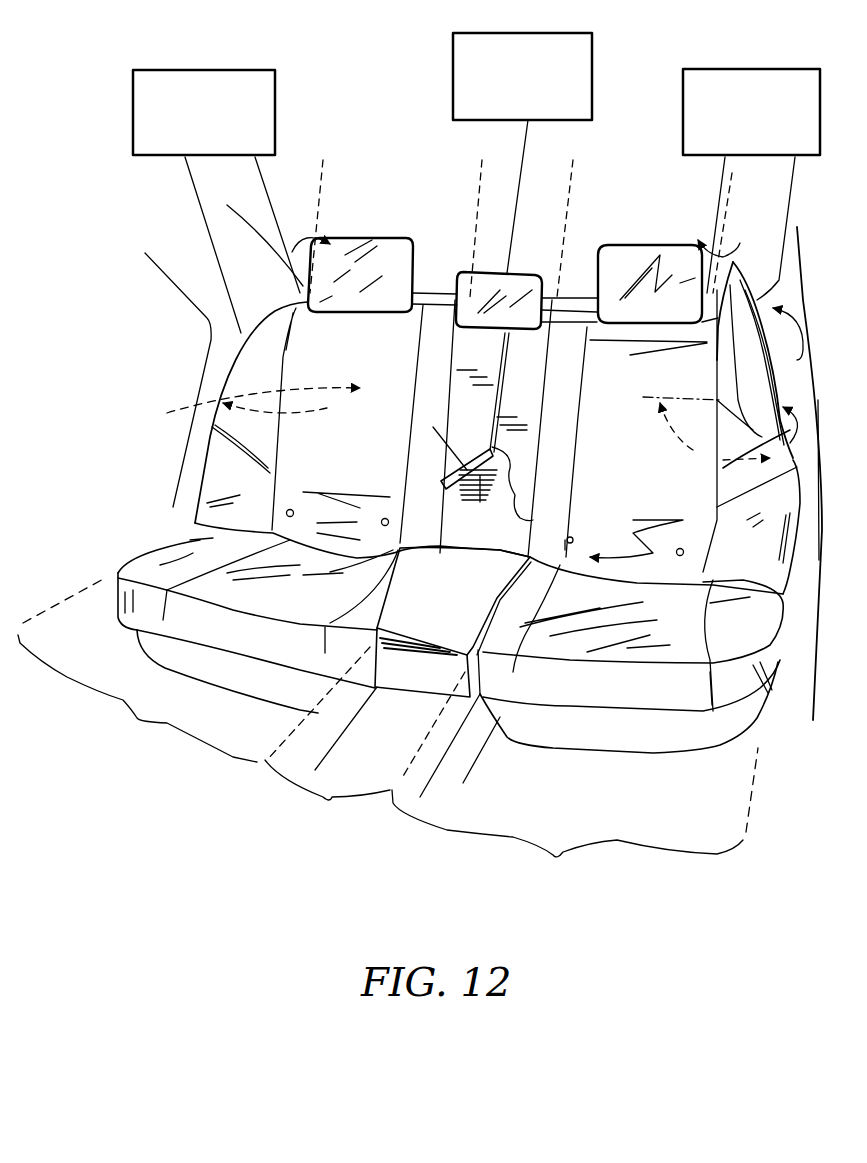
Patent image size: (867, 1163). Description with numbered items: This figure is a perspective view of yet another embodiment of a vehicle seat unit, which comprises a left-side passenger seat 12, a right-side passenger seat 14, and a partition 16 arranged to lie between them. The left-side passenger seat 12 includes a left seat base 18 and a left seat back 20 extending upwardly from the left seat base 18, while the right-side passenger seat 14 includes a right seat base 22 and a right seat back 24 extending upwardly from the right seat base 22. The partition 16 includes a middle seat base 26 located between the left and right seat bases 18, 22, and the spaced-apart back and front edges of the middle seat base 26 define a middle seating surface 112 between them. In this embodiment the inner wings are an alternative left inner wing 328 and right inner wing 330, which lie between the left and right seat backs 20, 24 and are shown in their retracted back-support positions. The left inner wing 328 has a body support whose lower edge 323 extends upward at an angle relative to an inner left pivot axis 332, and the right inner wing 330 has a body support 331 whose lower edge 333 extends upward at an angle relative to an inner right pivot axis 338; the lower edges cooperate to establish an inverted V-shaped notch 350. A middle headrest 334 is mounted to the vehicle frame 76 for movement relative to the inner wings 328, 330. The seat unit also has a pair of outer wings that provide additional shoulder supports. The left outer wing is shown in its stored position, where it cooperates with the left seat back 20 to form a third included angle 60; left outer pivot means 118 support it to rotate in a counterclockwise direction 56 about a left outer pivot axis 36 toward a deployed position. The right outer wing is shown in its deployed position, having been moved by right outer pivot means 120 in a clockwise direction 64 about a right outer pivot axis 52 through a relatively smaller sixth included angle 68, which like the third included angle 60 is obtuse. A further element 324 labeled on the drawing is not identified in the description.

The left-side passenger seat 12 is at (137, 669).
The right-side passenger seat 14 is at (575, 818).
The partition 16 is at (327, 796).
The left seat base 18 is at (240, 668).
The left seat back 20 is at (432, 287).
The right seat base 22 is at (622, 718).
The right seat back 24 is at (585, 288).
The middle seat base 26 is at (406, 700).
The left outer pivot axis 36 is at (324, 168).
The right outer pivot axis 52 is at (715, 197).
The counterclockwise direction 56 is at (319, 253).
The third included angle 60 is at (330, 405).
The clockwise direction 64 is at (734, 262).
The sixth included angle 68 is at (693, 451).
The vehicle frame 76 is at (453, 78).
The middle seating surface 112 is at (468, 613).
The left outer pivot means 118 is at (234, 70).
The right outer pivot means 120 is at (735, 69).
The lower edge 323 is at (487, 490).
The first seat back 324 is at (472, 360).
The left inner wing 328 is at (446, 409).
The right inner wing 330 is at (538, 447).
The body support 331 is at (540, 373).
The inner left pivot axis 332 is at (480, 189).
The lower edge 333 is at (533, 513).
The middle headrest 334 is at (523, 282).
The inner right pivot axis 338 is at (571, 181).
The inverted V-shaped notch 350 is at (490, 447).